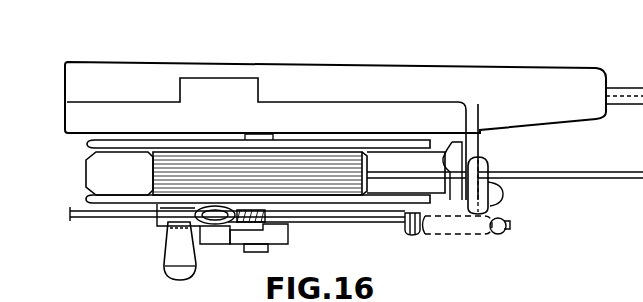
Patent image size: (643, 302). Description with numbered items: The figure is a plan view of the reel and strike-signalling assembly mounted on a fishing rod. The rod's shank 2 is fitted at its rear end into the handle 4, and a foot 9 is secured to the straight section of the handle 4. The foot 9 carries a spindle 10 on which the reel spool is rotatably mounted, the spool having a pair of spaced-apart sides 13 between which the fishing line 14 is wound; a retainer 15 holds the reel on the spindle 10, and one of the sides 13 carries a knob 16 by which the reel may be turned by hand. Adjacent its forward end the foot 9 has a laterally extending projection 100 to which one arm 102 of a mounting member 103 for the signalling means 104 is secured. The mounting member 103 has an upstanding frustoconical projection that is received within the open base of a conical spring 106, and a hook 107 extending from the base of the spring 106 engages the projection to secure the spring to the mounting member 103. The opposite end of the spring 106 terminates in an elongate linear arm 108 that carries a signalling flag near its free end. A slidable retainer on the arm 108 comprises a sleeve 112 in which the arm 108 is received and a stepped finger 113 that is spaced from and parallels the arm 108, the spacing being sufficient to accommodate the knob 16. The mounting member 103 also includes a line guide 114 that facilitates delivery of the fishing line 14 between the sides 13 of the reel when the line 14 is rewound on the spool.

The shank 2 is at (624, 87).
The handle 4 is at (520, 74).
The foot 9 is at (308, 115).
The spindle 10 is at (252, 254).
The sides 13 is at (86, 190).
The fishing line 14 is at (590, 179).
The retainer 15 is at (212, 234).
The knob 16 is at (160, 262).
The laterally extending projection 100 is at (480, 145).
The arm 102 is at (490, 166).
The mounting member 103 is at (512, 207).
The signalling means 104 is at (406, 236).
The conical spring 106 is at (456, 238).
The hook 107 is at (502, 233).
The linear arm 108 is at (71, 224).
The sleeve 112 is at (288, 246).
The stepped finger 113 is at (162, 224).
The line guide 114 is at (451, 142).